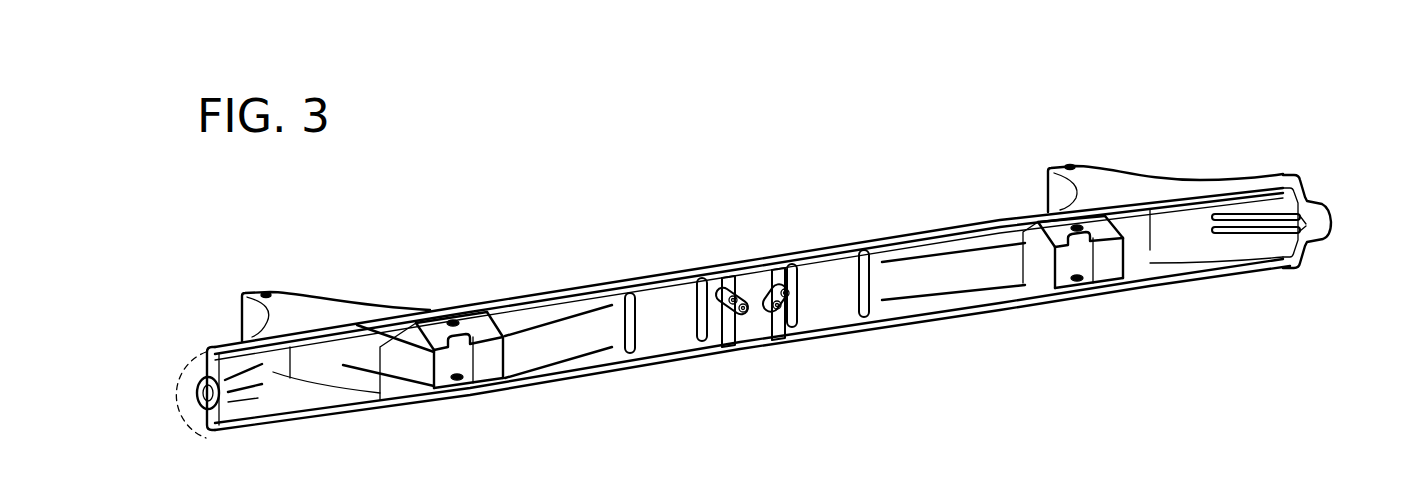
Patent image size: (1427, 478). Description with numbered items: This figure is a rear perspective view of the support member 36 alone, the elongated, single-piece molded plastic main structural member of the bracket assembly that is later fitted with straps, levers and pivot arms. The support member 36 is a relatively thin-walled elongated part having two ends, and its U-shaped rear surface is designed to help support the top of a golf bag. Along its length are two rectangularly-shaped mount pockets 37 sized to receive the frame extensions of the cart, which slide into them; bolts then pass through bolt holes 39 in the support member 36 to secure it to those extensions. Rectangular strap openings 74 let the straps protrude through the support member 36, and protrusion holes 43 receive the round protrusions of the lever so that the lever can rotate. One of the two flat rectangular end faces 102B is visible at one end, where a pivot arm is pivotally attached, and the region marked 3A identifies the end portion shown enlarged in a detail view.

The detail view region 3A is at (193, 352).
The support member 36 is at (737, 350).
The mount pockets 37 is at (487, 357).
The bolt holes 39 is at (463, 372).
The protrusion holes 43 is at (1068, 165).
The strap openings 74 is at (637, 295).
The end face 102B is at (1306, 182).